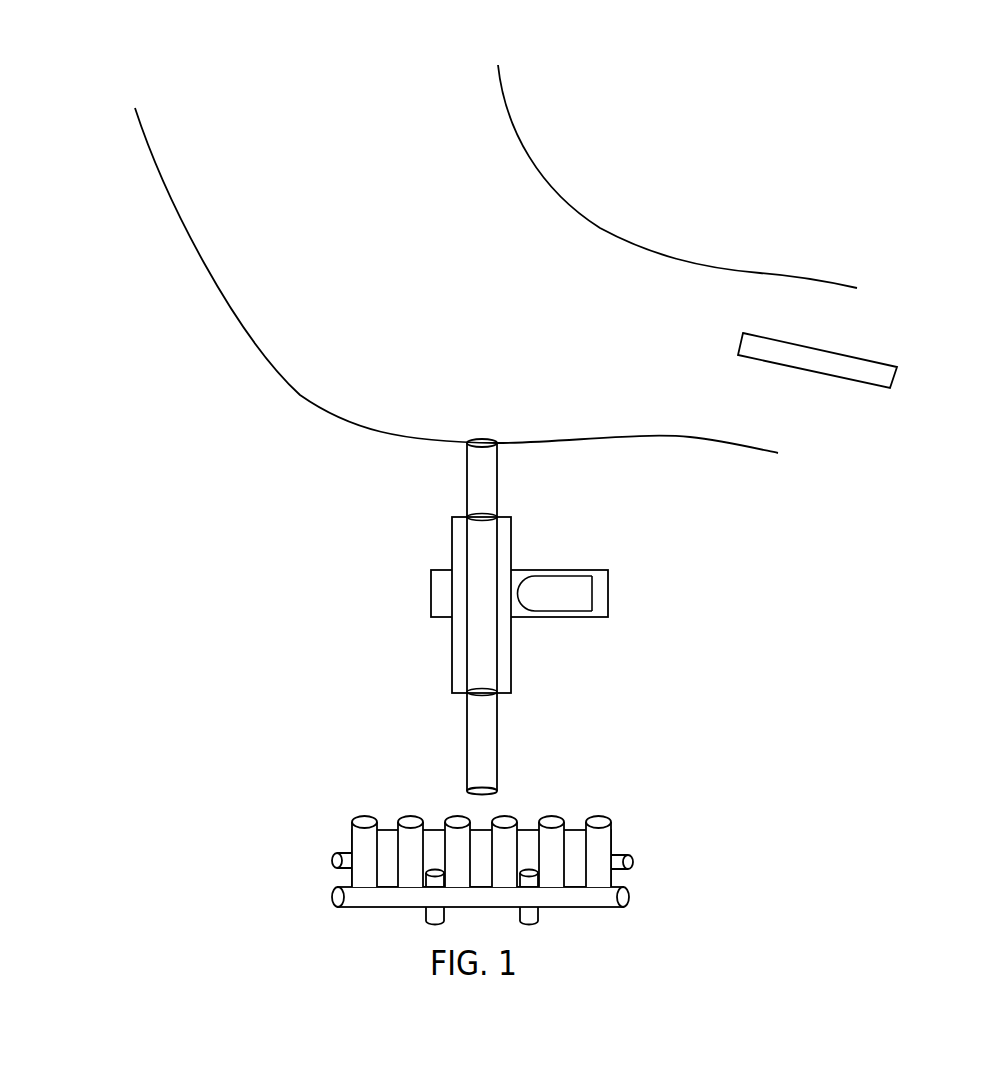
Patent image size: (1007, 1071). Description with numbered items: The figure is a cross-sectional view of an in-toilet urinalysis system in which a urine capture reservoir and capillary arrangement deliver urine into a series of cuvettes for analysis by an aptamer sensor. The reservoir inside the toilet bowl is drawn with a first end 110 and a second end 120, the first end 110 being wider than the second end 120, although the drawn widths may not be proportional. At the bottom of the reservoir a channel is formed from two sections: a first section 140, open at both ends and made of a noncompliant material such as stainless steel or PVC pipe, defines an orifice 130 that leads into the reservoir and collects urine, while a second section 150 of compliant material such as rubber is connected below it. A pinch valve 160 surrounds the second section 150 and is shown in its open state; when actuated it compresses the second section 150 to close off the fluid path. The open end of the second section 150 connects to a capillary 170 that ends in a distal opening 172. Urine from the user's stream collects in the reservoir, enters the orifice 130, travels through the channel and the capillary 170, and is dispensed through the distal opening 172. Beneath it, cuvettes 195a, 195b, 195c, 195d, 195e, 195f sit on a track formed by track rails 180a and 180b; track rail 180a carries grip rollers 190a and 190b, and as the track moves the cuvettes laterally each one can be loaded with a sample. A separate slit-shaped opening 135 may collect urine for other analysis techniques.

The first end of urine capture reservoir 110 is at (415, 130).
The second end of urine capture reservoir 120 is at (560, 320).
The orifice 130 is at (485, 440).
The slit-shaped opening 135 is at (868, 373).
The first section of channel 140 is at (467, 465).
The second section of channel 150 is at (453, 532).
The pinch valve 160 is at (610, 593).
The capillary 170 is at (497, 717).
The distal opening 172 is at (488, 787).
The track rail 180a is at (608, 896).
The track rail 180b is at (346, 853).
The grip roller 190a is at (428, 917).
The grip roller 190b is at (537, 917).
The cuvette 195a is at (355, 815).
The cuvette 195b is at (405, 815).
The cuvette 195c is at (446, 812).
The cuvette 195d is at (518, 812).
The cuvette 195e is at (560, 812).
The cuvette 195f is at (607, 812).